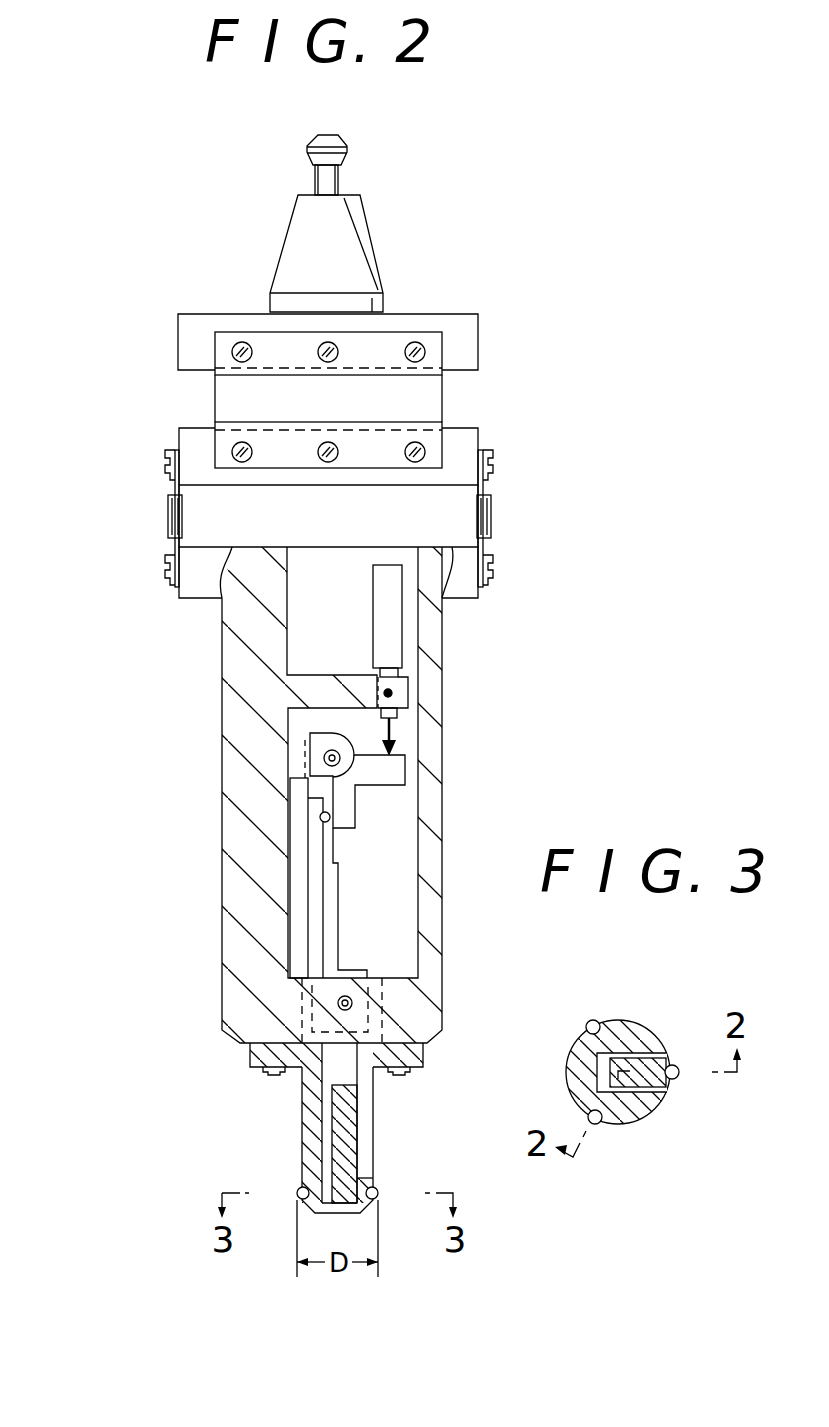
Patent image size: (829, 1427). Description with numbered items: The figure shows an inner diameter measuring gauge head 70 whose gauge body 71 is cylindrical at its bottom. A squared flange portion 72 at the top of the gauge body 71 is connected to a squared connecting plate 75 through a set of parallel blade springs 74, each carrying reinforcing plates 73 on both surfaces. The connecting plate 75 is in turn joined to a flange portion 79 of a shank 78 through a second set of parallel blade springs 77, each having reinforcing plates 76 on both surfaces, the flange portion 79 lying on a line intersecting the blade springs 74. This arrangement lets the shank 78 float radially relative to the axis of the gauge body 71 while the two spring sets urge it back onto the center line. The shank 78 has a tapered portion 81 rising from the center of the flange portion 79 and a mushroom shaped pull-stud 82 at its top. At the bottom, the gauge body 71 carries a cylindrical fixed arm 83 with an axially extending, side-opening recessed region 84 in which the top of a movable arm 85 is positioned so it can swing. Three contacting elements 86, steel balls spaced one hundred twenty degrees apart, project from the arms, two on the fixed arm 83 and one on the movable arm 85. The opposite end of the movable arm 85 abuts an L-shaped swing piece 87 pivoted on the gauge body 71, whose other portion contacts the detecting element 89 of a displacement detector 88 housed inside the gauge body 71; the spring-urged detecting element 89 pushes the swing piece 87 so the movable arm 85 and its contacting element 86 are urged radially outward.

In FIG. 2, the inner diameter measuring gauge head 70 is at (510, 385).
In FIG. 2, the gauge body 71 is at (222, 782).
In FIG. 2, the squared flange portion 72 is at (192, 598).
In FIG. 2, the reinforcing plates 73 is at (158, 521).
In FIG. 2, the blade springs 74 is at (168, 482).
In FIG. 2, the squared connecting plate 75 is at (179, 437).
In FIG. 2, the reinforcing plates 76 is at (218, 392).
In FIG. 2, the parallel blade springs 77 is at (215, 338).
In FIG. 2, the shank 78 is at (390, 260).
In FIG. 2, the flange portion 79 is at (415, 314).
In FIG. 2, the tapered portion 81 is at (356, 212).
In FIG. 2, the mushroom shaped pull-stud 82 is at (344, 149).
In FIG. 2, the fixed arm 83 is at (320, 1112).
In FIG. 3, the fixed arm 83 is at (630, 1026).
In FIG. 2, the recessed region 84 is at (340, 1152).
In FIG. 3, the recessed region 84 is at (648, 1058).
In FIG. 2, the movable arm 85 is at (350, 1058).
In FIG. 3, the movable arm 85 is at (660, 1095).
In FIG. 2, the contacting elements 86 is at (380, 1193).
In FIG. 3, the contacting elements 86 is at (591, 1020).
In FIG. 2, the L-shaped swing piece 87 is at (395, 777).
In FIG. 2, the displacement detector 88 is at (392, 652).
In FIG. 2, the detecting element 89 is at (398, 727).